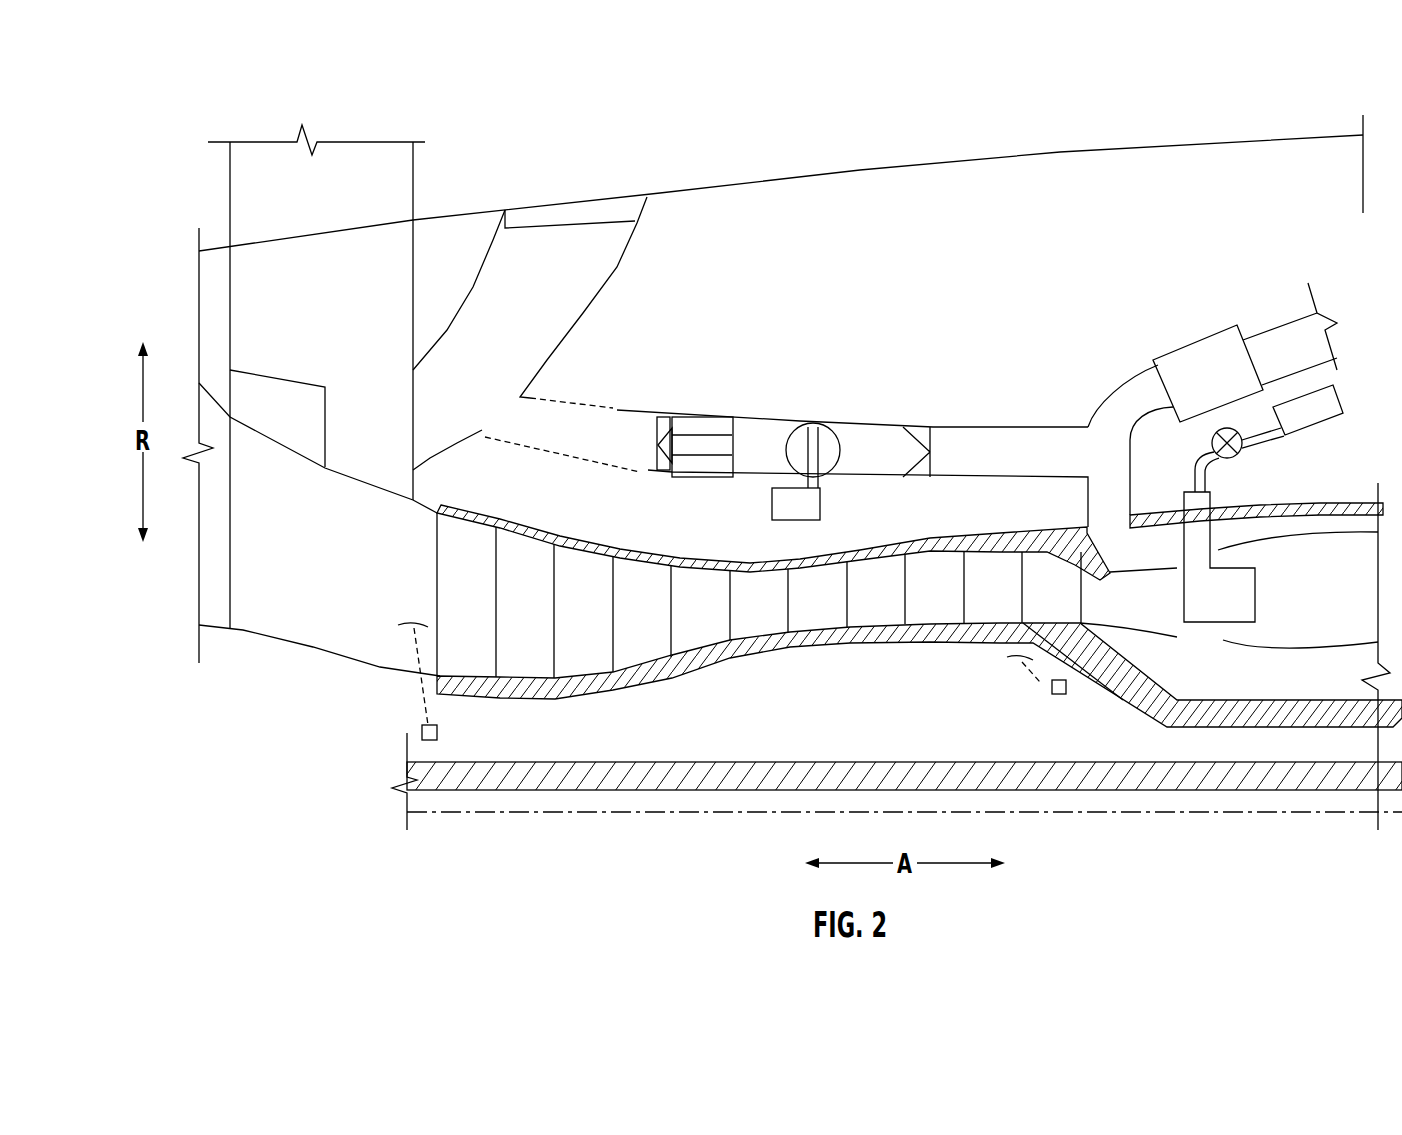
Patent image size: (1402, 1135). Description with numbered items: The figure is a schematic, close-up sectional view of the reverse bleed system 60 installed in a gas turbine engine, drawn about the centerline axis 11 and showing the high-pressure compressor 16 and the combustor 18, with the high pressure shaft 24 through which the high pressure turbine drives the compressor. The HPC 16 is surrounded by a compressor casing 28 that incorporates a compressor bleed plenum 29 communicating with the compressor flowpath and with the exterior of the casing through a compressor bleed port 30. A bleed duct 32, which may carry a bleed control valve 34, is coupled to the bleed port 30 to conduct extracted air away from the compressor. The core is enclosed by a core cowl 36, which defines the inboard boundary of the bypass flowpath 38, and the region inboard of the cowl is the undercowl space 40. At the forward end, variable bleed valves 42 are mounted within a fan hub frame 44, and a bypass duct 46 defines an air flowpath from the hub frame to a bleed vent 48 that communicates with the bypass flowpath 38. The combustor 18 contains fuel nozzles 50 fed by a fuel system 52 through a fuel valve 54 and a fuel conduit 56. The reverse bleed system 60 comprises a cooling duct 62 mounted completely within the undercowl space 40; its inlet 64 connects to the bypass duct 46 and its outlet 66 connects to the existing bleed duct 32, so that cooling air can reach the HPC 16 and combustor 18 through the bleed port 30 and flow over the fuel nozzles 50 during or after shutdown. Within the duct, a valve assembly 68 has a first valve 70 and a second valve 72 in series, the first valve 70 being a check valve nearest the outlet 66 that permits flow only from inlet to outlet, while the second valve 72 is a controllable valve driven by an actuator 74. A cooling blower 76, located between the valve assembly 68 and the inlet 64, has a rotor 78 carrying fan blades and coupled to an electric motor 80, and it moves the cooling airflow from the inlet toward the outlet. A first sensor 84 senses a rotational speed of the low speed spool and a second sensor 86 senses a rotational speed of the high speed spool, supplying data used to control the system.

The centerline axis 11 is at (540, 812).
The high-pressure compressor 16 is at (919, 683).
The combustor 18 is at (1260, 686).
The high pressure shaft 24 is at (1135, 705).
The compressor casing 28 is at (950, 537).
The compressor bleed plenum 29 is at (1159, 567).
The compressor bleed port 30 is at (1110, 497).
The bleed duct 32 is at (1140, 372).
The bleed control valve 34 is at (1224, 396).
The core cowl 36 is at (1257, 135).
The bypass flowpath 38 is at (929, 117).
The undercowl space 40 is at (1166, 234).
The variable bleed valve 42 is at (288, 390).
The fan hub frame 44 is at (413, 283).
The bypass duct 46 is at (608, 287).
The bleed vent 48 is at (605, 213).
The fuel nozzle 50 is at (1237, 593).
The fuel system 52 is at (1317, 420).
The fuel valve 54 is at (1243, 448).
The fuel conduit 56 is at (1198, 482).
The reverse bleed system 60 is at (852, 434).
The cooling duct 62 is at (618, 407).
The inlet 64 is at (525, 418).
The outlet 66 is at (1080, 440).
The valve assembly 68 is at (658, 386).
The first valve 70 is at (930, 436).
The second valve 72 is at (854, 446).
The actuator 74 is at (788, 503).
The cooling blower 76 is at (716, 401).
The rotor 78 is at (685, 447).
The electric motor 80 is at (713, 467).
The first sensor 84 is at (440, 733).
The second sensor 86 is at (1052, 690).